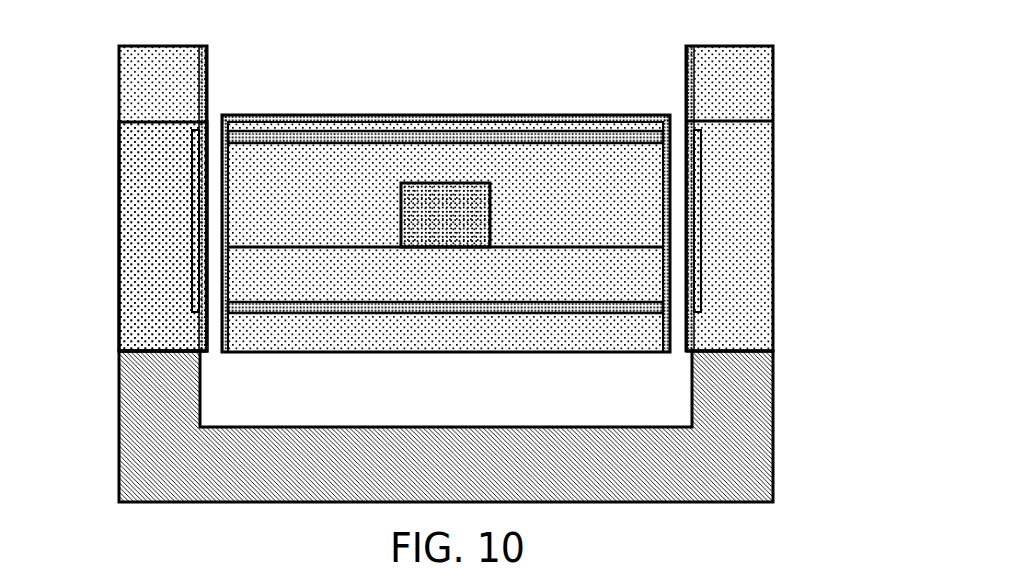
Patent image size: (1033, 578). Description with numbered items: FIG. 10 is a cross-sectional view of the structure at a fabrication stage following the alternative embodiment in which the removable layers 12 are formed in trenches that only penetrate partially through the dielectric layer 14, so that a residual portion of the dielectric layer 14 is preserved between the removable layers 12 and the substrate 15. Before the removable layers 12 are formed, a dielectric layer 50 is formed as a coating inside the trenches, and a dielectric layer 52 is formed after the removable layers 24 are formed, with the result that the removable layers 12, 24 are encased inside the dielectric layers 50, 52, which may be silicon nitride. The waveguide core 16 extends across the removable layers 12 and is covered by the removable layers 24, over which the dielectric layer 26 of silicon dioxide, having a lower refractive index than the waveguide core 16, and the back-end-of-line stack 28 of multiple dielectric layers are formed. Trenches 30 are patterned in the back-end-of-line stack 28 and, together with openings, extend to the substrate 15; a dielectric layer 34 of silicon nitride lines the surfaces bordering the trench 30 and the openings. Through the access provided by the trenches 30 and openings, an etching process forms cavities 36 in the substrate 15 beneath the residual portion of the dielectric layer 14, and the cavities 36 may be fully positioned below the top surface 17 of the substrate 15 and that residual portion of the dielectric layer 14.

The removable layers 12 is at (636, 287).
The dielectric layer 14 is at (155, 312).
The substrate 15 is at (155, 430).
The waveguide core 16 is at (435, 219).
The top surface 17 is at (170, 351).
The removable layers 24 is at (630, 208).
The dielectric layer 26 is at (150, 146).
The back-end-of-line stack 28 is at (740, 93).
The trenches 30 is at (448, 92).
The dielectric layer 34 is at (690, 237).
The cavities 36 is at (461, 399).
The dielectric layer 50 is at (195, 265).
The dielectric layer 52 is at (618, 134).